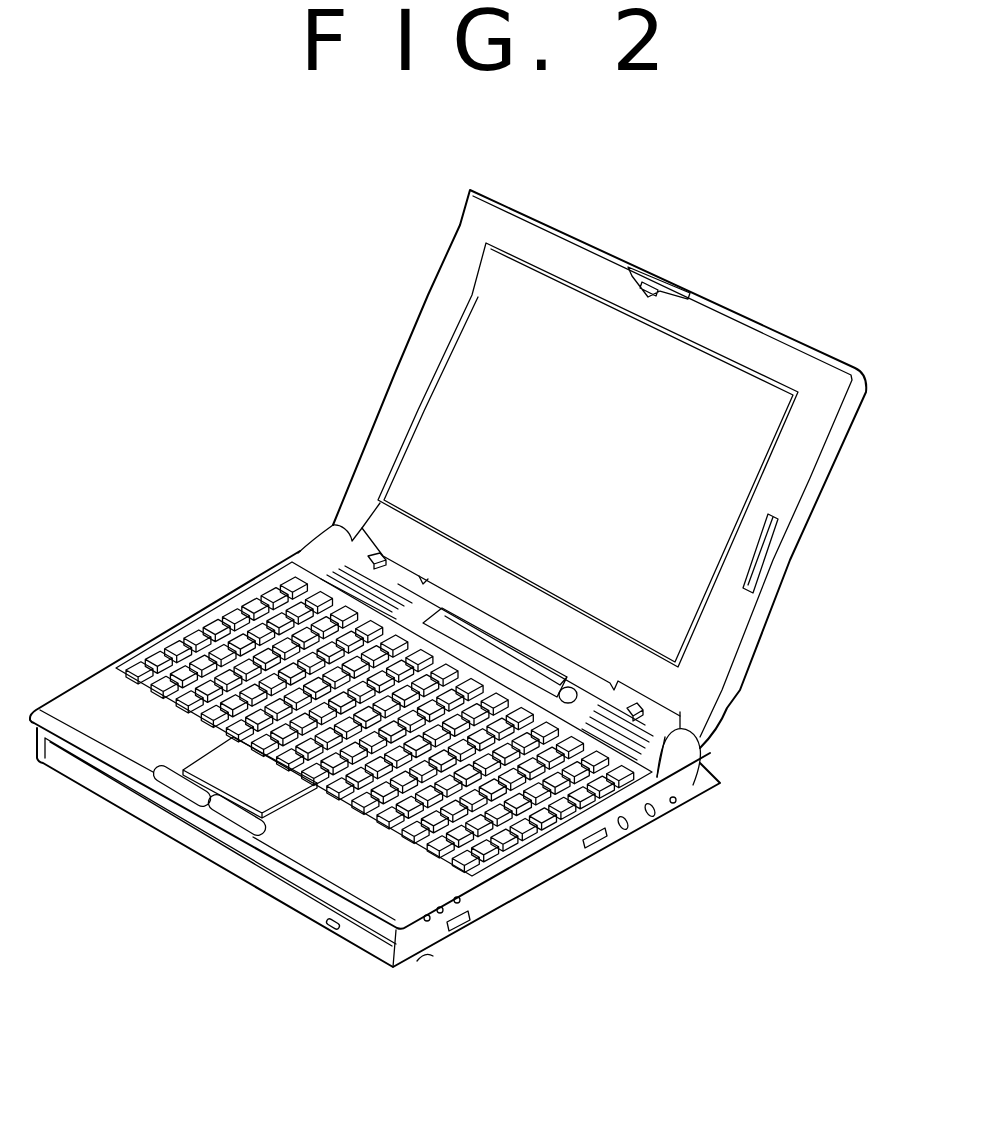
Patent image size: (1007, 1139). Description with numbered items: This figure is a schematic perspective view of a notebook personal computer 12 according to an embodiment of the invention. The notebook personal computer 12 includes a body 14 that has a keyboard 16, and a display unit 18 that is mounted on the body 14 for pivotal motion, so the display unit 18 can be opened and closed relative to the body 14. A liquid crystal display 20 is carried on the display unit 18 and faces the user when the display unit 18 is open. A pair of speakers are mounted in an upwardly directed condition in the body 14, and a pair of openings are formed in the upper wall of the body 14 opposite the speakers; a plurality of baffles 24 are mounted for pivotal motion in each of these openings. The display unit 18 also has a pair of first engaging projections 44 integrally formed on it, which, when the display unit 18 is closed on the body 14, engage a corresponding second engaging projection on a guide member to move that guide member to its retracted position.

The notebook personal computer 12 is at (310, 527).
The body 14 is at (535, 880).
The keyboard 16 is at (207, 633).
The display unit 18 is at (798, 460).
The liquid crystal display (LCD) 20 is at (588, 328).
The baffles 24 is at (330, 580).
The first engaging projections 44 is at (374, 553).